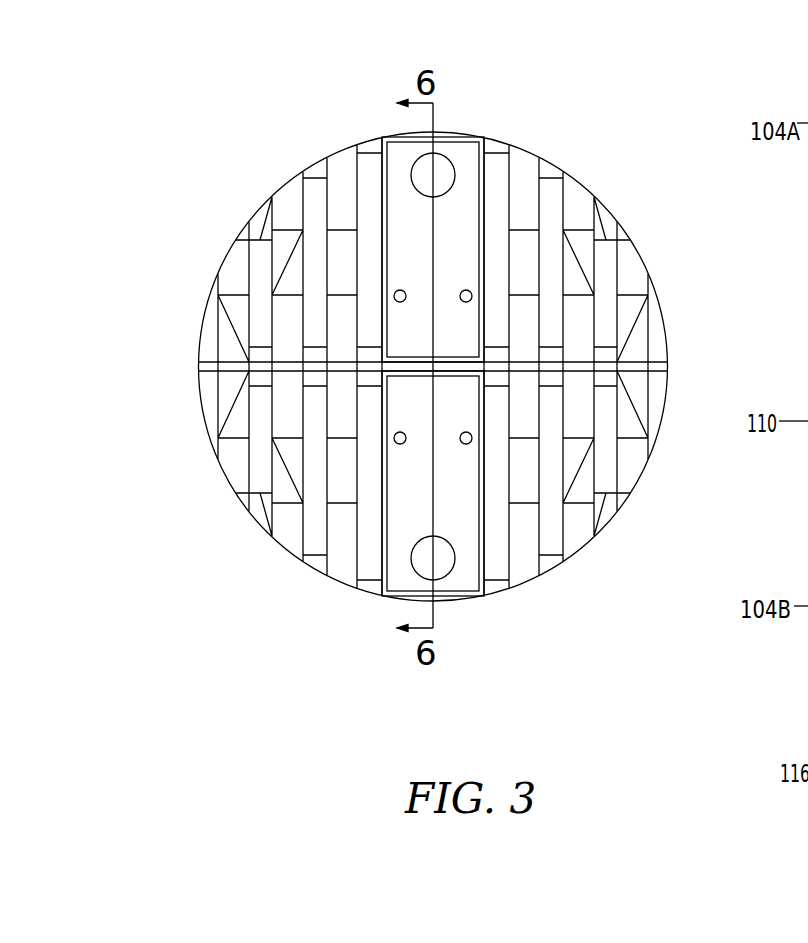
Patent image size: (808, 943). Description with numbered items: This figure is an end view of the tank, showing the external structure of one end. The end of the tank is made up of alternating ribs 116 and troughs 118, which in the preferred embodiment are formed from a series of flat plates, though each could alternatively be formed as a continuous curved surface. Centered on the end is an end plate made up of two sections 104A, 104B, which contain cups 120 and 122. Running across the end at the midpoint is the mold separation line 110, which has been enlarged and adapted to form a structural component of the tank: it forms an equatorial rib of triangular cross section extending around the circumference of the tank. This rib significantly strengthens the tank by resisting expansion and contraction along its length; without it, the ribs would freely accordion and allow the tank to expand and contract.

The mold separation line 110 is at (667, 360).
The end plate section 104A is at (486, 136).
The end plate section 104B is at (487, 596).
The ribs 116 is at (342, 587).
The troughs 118 is at (363, 137).
The cup 120 is at (454, 169).
The cup 122 is at (472, 292).